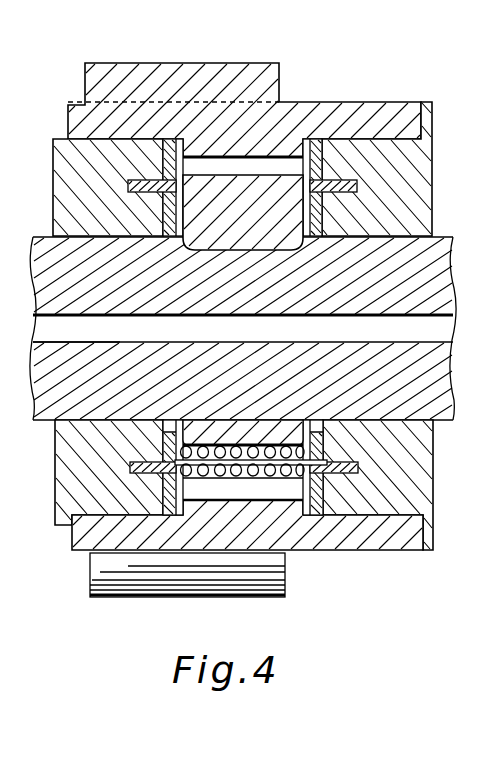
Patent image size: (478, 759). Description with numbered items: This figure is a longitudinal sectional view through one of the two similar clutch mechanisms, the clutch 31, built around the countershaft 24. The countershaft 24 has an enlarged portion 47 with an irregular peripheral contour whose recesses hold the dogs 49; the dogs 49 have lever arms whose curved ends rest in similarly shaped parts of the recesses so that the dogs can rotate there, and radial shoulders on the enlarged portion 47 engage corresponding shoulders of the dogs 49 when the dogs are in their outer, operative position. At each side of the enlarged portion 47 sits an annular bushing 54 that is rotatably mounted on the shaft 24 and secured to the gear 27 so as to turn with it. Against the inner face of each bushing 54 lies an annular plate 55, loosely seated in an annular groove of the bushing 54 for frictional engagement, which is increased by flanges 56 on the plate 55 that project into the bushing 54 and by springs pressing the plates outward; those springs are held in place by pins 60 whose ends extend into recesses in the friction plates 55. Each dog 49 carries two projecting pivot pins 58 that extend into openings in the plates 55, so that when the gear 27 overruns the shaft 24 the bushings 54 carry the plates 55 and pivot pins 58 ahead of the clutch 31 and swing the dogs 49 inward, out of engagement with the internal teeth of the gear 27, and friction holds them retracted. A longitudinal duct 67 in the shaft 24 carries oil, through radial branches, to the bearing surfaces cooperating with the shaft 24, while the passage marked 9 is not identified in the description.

The shaft bore 9 is at (5, 310).
The countershaft 24 is at (32, 250).
The gear 27 is at (218, 70).
The clutch 31 is at (197, 170).
The enlarged portion 47 is at (296, 436).
The dog 49 is at (270, 180).
The annular bushing 54 is at (417, 194).
The annular plate 55 is at (172, 440).
The flange 56 is at (132, 468).
The pivot pin 58 is at (312, 178).
The pin 60 is at (243, 472).
The longitudinal duct 67 is at (47, 331).